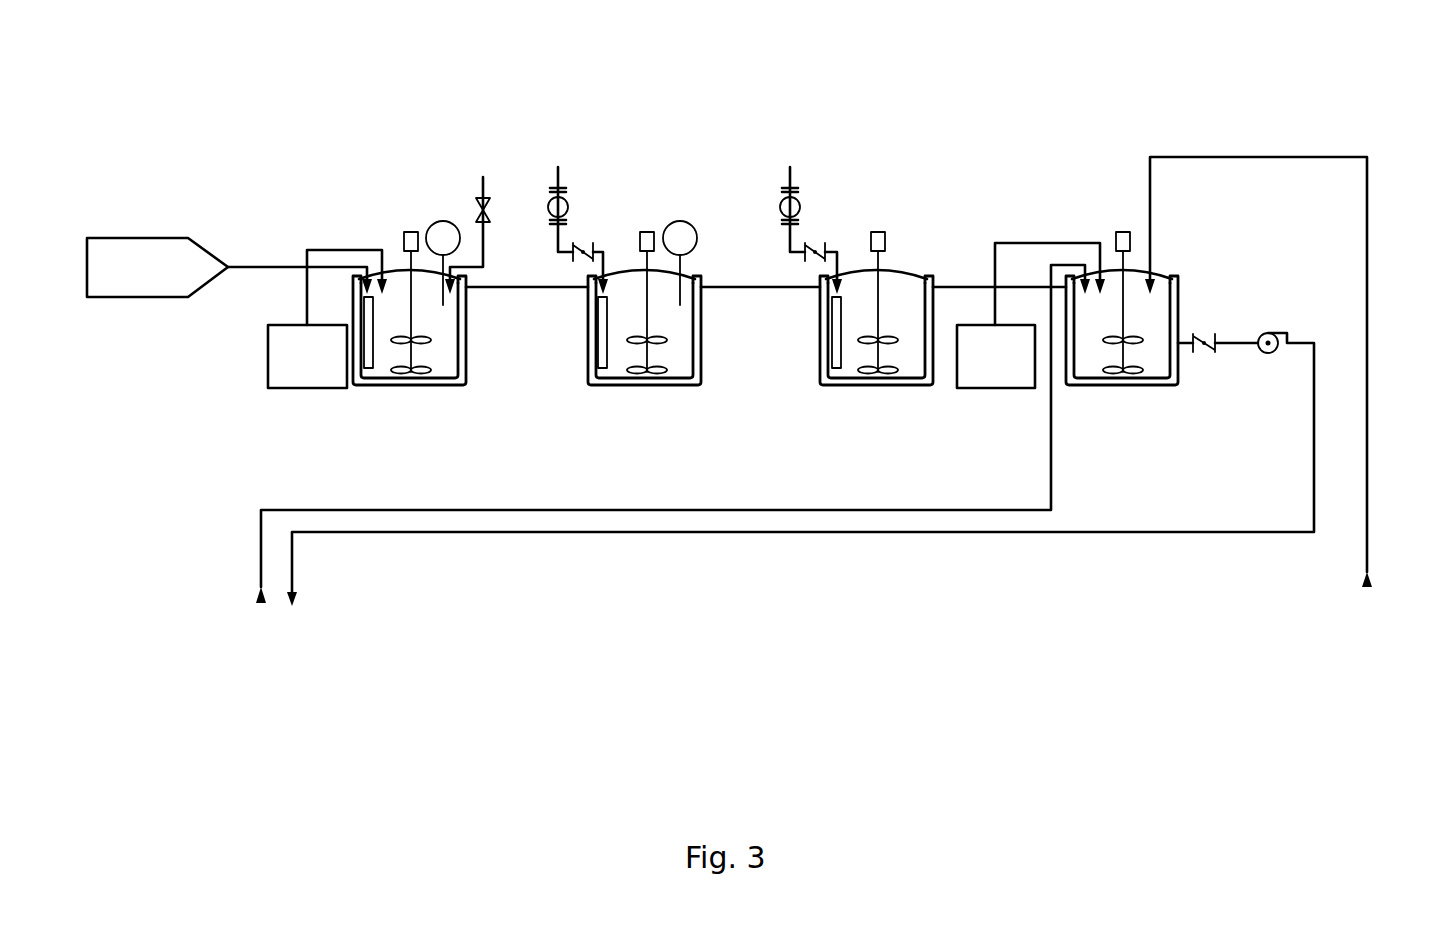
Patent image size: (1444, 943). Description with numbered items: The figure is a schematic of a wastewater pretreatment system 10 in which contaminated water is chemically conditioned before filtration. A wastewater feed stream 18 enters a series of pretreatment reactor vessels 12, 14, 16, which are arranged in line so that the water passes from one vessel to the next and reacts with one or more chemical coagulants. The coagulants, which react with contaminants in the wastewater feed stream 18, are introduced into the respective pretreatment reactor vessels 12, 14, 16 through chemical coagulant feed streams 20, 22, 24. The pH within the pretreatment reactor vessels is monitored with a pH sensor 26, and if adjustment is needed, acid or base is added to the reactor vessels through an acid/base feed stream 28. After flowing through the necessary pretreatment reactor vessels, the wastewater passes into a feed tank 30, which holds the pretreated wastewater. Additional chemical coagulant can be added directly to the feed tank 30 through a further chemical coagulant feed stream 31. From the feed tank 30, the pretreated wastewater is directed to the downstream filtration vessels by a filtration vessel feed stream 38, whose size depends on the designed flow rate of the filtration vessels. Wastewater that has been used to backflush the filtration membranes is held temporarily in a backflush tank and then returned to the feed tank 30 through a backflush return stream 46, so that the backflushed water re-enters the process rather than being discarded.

The wastewater pretreatment system 10 is at (866, 118).
The pretreatment reactor vessel 12 is at (383, 390).
The pretreatment reactor vessel 14 is at (590, 385).
The pretreatment reactor vessel 16 is at (847, 386).
The wastewater feed stream 18 is at (262, 267).
The chemical coagulant feed stream 20 is at (307, 290).
The chemical coagulant feed stream 22 is at (600, 266).
The chemical coagulant feed stream 24 is at (832, 266).
The pH sensor 26 is at (432, 225).
The acid/base feed stream 28 is at (485, 228).
The feed tank 30 is at (1093, 368).
The chemical coagulant feed stream 31 is at (1030, 243).
The filtration vessel feed stream 38 is at (930, 535).
The backflush return stream 46 is at (1367, 443).